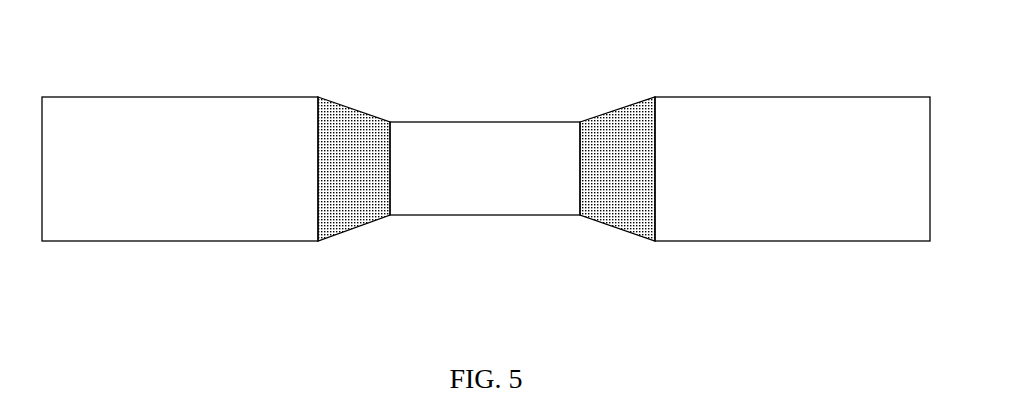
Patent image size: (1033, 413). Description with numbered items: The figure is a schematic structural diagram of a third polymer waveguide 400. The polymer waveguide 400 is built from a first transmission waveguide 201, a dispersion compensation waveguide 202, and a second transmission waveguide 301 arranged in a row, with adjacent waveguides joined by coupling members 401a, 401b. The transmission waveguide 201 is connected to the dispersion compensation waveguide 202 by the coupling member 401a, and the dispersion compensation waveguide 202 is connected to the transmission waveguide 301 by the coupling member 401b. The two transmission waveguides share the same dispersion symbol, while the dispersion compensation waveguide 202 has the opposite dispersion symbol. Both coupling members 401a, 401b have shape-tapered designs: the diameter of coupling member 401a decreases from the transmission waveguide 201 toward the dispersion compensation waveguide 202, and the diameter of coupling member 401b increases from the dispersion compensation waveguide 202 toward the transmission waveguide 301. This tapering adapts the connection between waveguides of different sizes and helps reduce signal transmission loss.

The transmission waveguide 201 is at (178, 97).
The coupling member 401a is at (343, 105).
The dispersion compensation waveguide 202 is at (471, 122).
The coupling member 401b is at (604, 112).
The transmission waveguide 301 is at (748, 97).
The polymer waveguide 400 is at (486, 163).